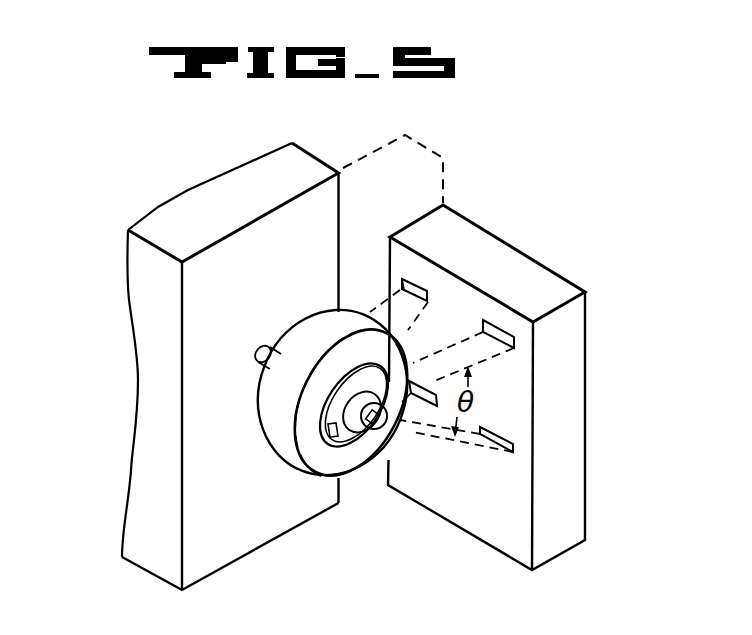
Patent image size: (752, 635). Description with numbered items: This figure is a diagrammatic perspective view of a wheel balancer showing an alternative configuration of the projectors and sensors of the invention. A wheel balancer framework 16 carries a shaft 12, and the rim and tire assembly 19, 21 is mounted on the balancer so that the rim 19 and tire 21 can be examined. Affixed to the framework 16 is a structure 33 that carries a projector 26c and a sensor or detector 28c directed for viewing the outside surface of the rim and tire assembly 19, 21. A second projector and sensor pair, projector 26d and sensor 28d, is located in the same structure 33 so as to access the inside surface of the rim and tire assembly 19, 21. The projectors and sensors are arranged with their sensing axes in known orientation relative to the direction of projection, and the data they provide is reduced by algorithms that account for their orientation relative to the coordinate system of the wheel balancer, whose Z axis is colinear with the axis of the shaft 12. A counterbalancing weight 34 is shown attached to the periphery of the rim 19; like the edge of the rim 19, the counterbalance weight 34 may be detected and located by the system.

The shaft 12 is at (273, 346).
The wheel balancer framework 16 is at (136, 402).
The rim 19 is at (345, 433).
The tire 21 is at (268, 391).
The projector 26c is at (535, 330).
The projector 26d is at (422, 280).
The sensor or detector 28c is at (507, 437).
The sensor 28d is at (432, 407).
The structure 33 is at (520, 247).
The counterbalancing weight 34 is at (316, 471).